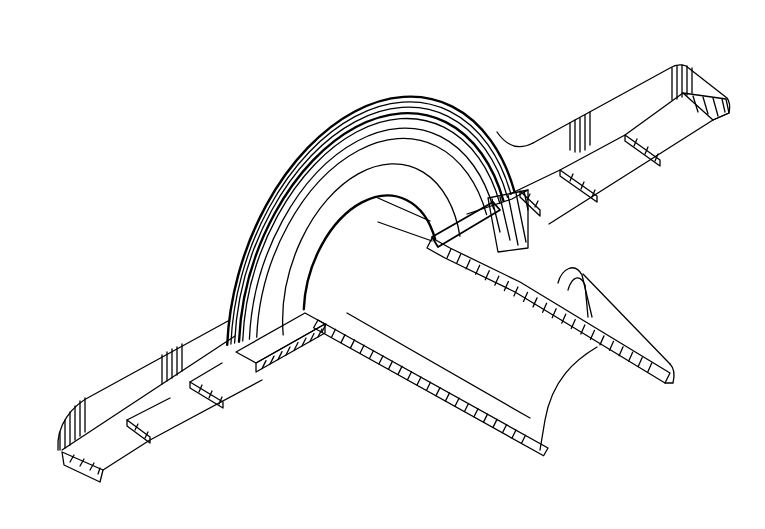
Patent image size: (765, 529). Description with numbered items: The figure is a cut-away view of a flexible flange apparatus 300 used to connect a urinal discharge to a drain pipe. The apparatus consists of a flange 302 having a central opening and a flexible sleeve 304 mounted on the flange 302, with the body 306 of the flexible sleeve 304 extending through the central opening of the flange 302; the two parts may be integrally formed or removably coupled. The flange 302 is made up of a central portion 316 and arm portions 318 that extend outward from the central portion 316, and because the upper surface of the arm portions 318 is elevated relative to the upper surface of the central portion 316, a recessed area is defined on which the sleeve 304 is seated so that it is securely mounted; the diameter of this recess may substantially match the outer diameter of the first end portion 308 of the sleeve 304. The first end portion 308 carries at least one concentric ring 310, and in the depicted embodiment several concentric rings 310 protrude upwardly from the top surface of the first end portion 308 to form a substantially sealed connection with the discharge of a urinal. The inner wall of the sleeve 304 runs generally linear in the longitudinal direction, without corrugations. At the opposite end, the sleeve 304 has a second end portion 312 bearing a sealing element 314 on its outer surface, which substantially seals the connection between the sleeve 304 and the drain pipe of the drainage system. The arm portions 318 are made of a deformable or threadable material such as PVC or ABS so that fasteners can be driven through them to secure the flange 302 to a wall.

The flexible flange apparatus 300 is at (177, 119).
The flange 302 is at (516, 76).
The flexible sleeve 304 is at (432, 426).
The body 306 is at (382, 364).
The first end portion 308 is at (338, 123).
The concentric ring 310 is at (399, 101).
The second end portion 312 is at (650, 322).
The sealing element 314 is at (572, 272).
The central portion 316 is at (506, 136).
The arm portions 318 is at (626, 99).